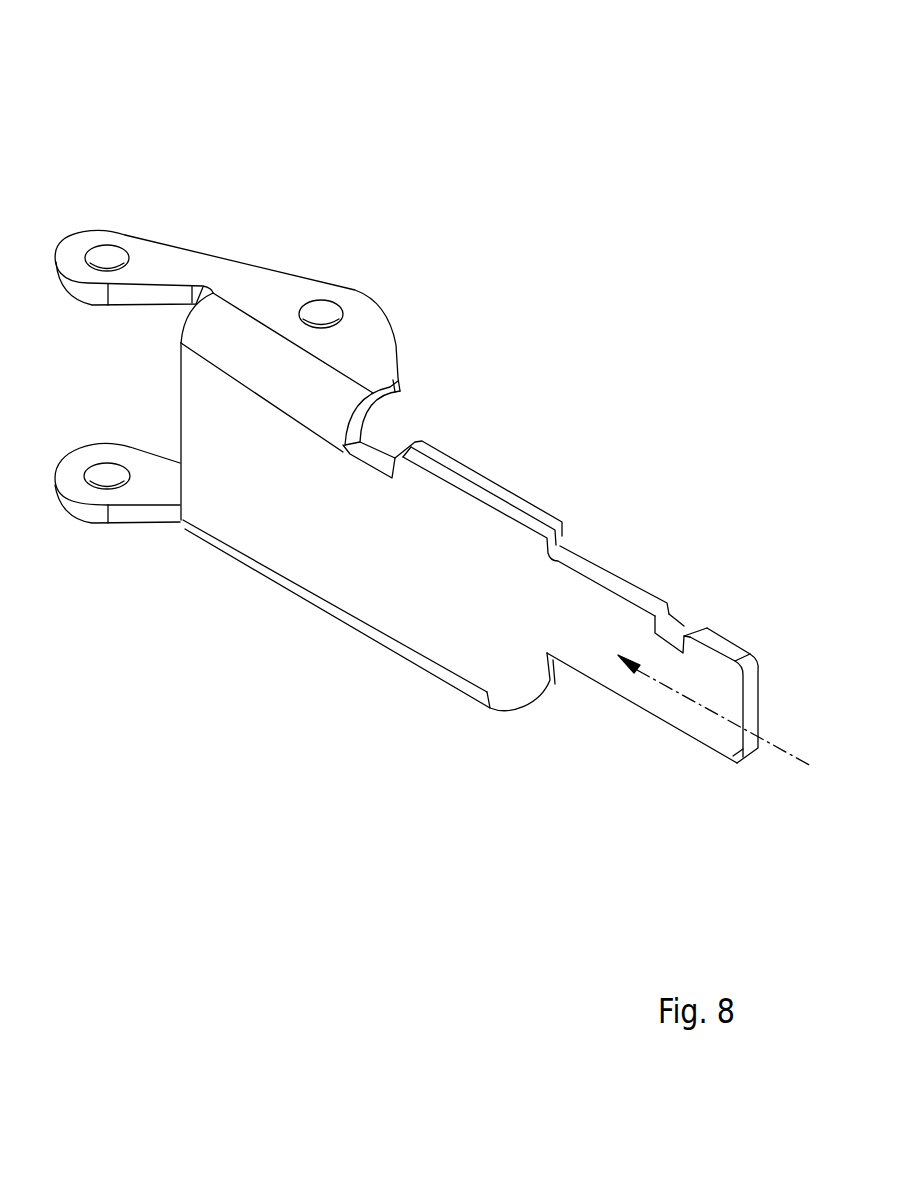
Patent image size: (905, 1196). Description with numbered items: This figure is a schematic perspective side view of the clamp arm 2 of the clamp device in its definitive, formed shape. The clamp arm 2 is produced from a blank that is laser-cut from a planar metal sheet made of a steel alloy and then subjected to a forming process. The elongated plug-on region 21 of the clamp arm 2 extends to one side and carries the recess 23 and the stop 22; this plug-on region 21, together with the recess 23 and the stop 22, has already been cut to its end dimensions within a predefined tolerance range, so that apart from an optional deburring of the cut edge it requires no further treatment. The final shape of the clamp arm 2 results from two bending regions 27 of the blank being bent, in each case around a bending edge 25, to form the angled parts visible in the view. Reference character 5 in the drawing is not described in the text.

The clamp arm 2 is at (154, 104).
The plug-on region 21 is at (667, 707).
The stop 22 is at (562, 663).
The recess 23 is at (682, 623).
The bending edge 25 is at (322, 387).
The bending region 27 is at (287, 290).
The insertion direction axis 5 is at (775, 743).